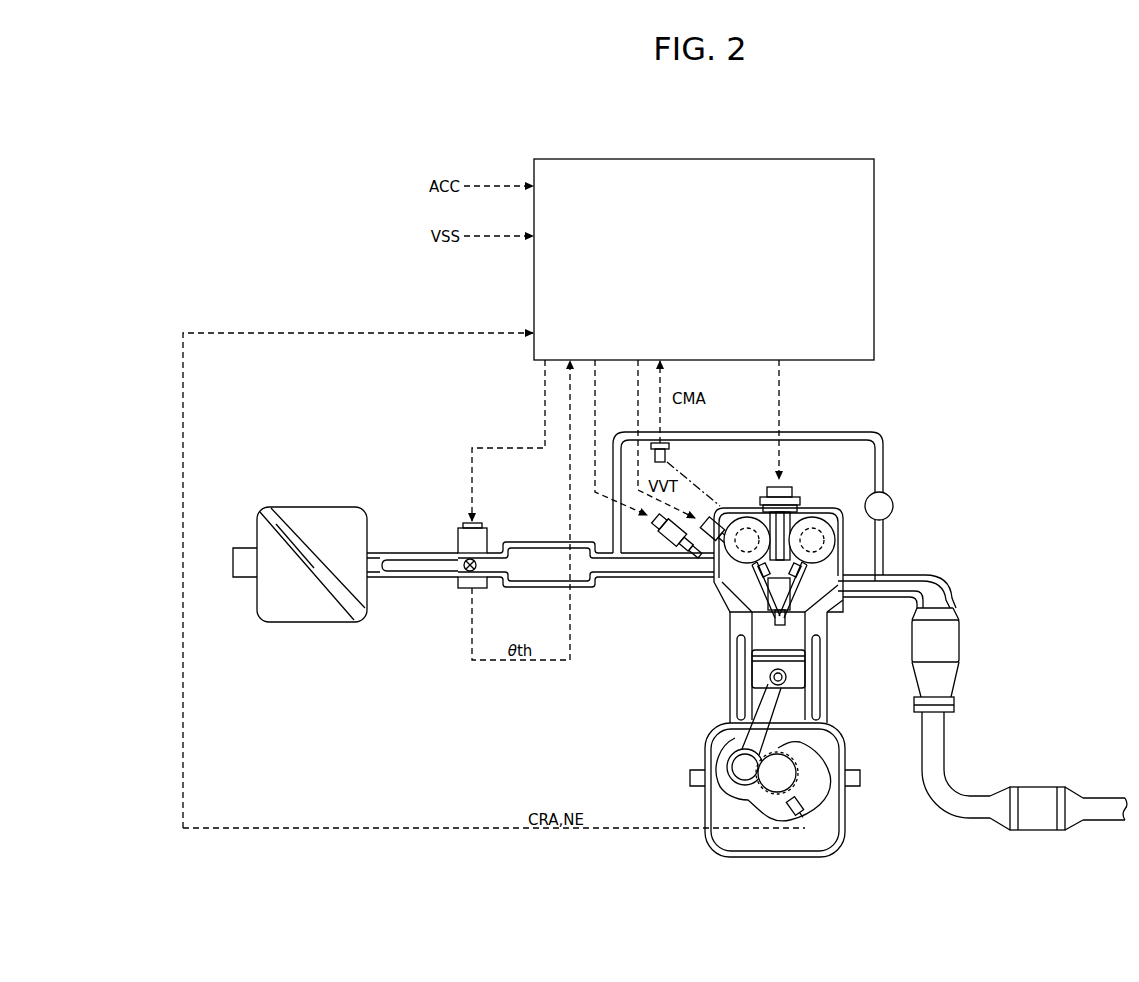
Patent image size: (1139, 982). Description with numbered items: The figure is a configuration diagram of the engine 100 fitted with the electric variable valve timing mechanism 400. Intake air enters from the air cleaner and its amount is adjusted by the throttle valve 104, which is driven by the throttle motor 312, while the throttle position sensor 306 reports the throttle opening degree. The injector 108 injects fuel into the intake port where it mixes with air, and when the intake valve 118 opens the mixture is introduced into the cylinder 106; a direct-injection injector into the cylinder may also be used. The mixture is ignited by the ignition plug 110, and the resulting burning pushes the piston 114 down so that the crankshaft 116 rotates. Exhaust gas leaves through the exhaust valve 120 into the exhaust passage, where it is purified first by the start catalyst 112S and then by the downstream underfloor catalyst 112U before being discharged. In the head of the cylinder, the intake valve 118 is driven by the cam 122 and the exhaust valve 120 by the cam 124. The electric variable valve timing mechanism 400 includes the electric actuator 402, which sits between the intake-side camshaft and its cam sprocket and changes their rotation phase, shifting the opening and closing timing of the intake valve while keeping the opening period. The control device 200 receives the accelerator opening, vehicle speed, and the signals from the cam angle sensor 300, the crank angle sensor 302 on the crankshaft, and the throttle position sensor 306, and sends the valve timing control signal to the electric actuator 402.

The engine 100 is at (958, 498).
The throttle valve 104 is at (489, 560).
The cylinder 106 is at (760, 645).
The injector 108 is at (662, 541).
The ignition plug 110 is at (797, 498).
The catalyst (start cat, S/C catalyst) 112S is at (961, 645).
The catalyst (underfloor, U/F catalyst) 112U is at (1034, 787).
The piston 114 is at (752, 694).
The crankshaft 116 is at (815, 808).
The intake valve 118 is at (752, 613).
The exhaust valve 120 is at (833, 598).
The cam (intake side) 122 is at (740, 532).
The cam (exhaust side) 124 is at (818, 530).
The control device 200 is at (689, 158).
The cam angle sensor 300 is at (668, 442).
The crank angle sensor 302 is at (806, 803).
The throttle position sensor 306 is at (458, 583).
The throttle motor 312 is at (457, 538).
The electric VVT mechanism 400 is at (733, 514).
The electric actuator 402 is at (702, 550).